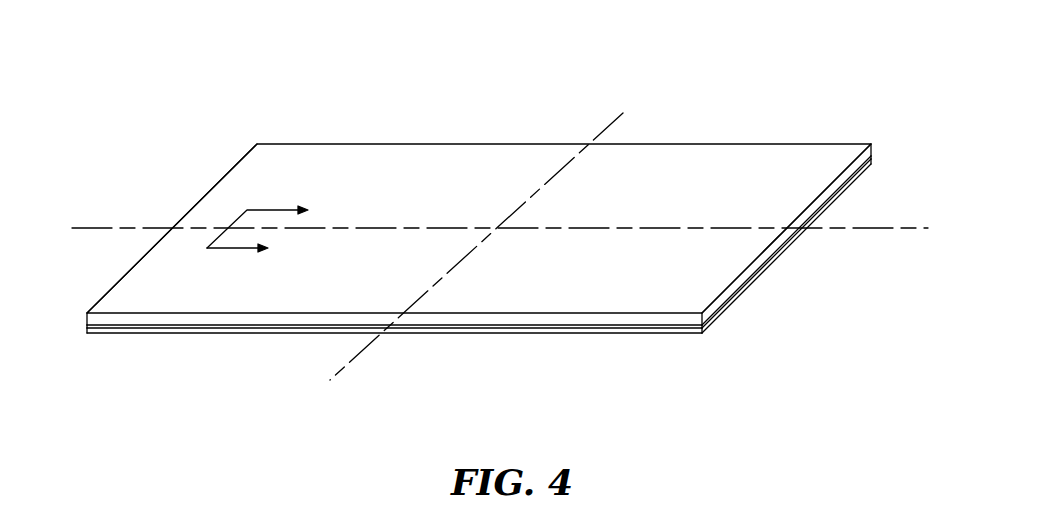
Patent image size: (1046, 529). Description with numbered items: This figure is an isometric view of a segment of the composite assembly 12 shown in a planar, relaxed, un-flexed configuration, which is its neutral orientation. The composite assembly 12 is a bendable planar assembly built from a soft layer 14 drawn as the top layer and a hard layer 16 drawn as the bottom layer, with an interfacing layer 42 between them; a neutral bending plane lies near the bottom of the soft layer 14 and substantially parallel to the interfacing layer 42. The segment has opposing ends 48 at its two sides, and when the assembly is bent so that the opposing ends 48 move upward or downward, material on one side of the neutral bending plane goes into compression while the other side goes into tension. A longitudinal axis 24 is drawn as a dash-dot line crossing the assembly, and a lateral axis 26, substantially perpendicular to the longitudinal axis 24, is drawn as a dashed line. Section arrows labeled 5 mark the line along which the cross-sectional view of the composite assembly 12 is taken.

The composite assembly 12 is at (479, 227).
The soft layer 14 is at (247, 318).
The hard layer 16 is at (478, 328).
The longitudinal axis 24 is at (600, 133).
The lateral axis 26 is at (92, 228).
The interfacing layer 42 is at (595, 328).
The opposing ends 48 is at (193, 207).
The section line 5- 5 is at (267, 230).